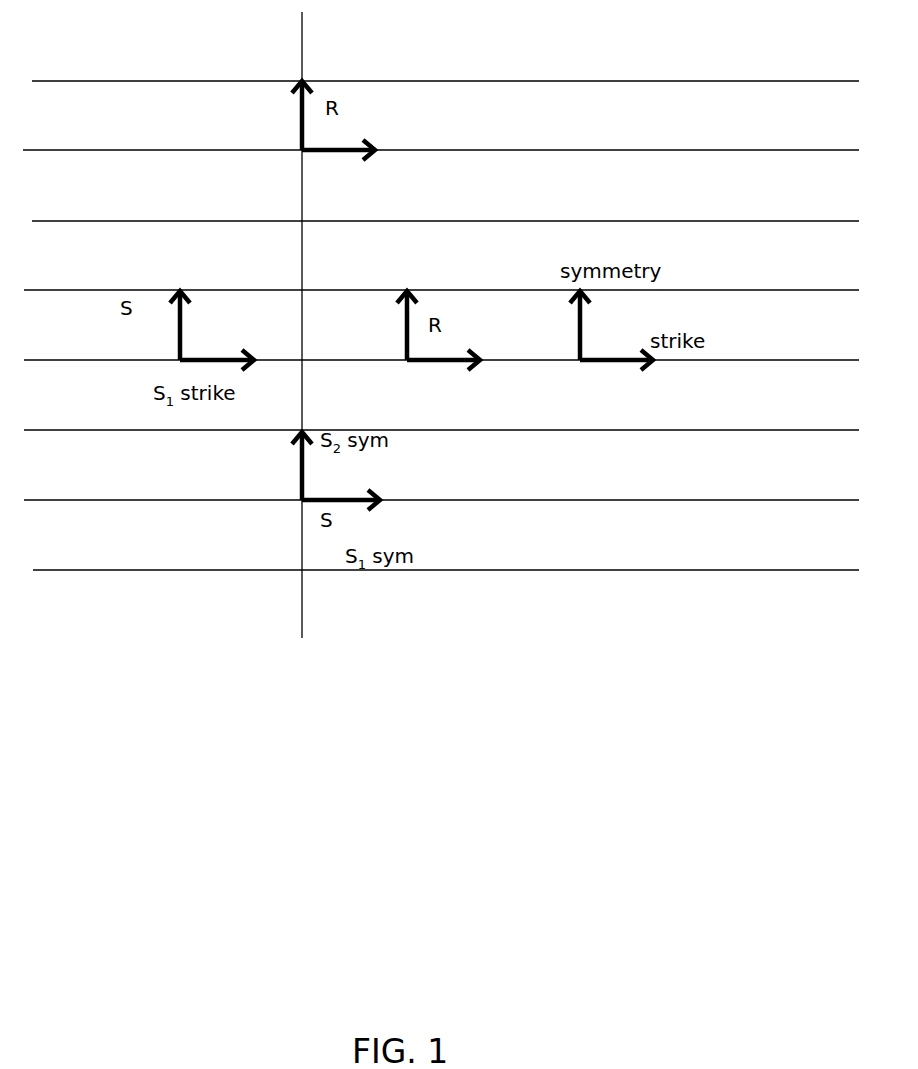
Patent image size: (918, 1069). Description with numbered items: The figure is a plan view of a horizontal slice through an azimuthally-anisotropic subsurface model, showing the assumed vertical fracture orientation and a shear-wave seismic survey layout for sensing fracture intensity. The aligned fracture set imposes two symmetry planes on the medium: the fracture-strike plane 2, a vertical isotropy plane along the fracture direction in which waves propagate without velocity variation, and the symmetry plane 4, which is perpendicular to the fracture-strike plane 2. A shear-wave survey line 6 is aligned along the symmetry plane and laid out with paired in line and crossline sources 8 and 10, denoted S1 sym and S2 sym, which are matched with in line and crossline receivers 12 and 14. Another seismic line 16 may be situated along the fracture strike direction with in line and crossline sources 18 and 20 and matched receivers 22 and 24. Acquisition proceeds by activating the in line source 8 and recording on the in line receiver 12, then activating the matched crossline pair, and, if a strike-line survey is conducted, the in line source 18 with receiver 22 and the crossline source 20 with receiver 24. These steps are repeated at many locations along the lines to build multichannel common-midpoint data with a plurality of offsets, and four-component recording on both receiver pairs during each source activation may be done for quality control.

The fracture-strike plane 2 is at (632, 336).
The symmetry plane 4 is at (594, 295).
The shear-wave survey line 6 is at (390, 323).
The in line source 8 is at (285, 464).
The crossline source 10 is at (347, 515).
The in line receiver 12 is at (281, 91).
The crossline receiver 14 is at (351, 139).
The seismic line 16 is at (441, 380).
The in line source 18 is at (222, 373).
The crossline source 20 is at (177, 293).
The in line receiver 22 is at (449, 345).
The crossline receiver 24 is at (406, 309).